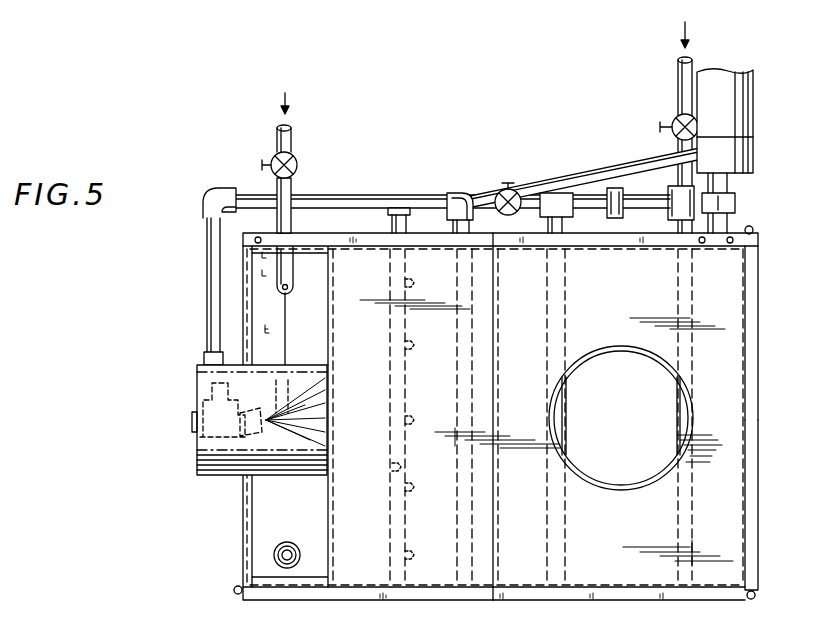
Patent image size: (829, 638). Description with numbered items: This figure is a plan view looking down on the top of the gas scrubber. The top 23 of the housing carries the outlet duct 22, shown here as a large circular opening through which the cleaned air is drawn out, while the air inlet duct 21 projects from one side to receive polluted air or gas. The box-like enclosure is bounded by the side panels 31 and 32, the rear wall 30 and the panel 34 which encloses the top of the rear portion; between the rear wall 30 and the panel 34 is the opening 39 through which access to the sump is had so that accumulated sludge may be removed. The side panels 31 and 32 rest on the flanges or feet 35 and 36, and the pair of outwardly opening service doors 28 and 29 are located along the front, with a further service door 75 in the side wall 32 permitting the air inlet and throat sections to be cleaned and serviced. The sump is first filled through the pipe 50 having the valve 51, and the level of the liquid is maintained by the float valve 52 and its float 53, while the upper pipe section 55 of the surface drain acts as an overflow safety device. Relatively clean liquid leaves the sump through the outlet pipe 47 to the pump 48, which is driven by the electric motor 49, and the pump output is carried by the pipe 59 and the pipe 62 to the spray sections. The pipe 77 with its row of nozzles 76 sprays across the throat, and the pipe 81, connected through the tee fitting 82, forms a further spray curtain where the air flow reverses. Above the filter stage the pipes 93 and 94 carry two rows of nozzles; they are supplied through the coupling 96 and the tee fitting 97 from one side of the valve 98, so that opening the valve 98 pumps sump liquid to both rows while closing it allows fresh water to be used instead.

The air inlet duct 21 is at (210, 477).
The outlet duct 22 is at (607, 492).
The top 23 is at (731, 288).
The service door 28 is at (753, 472).
The service door 29 is at (750, 314).
The rear wall 30 is at (243, 522).
The side panel 31 is at (413, 243).
The side panel 32 is at (572, 595).
The panel 34 is at (326, 497).
The flange or foot 35 is at (313, 232).
The flange or foot 36 is at (648, 598).
The opening 39 is at (259, 312).
The outlet pipe 47 is at (730, 223).
The pump 48 is at (742, 148).
The electric motor 49 is at (735, 100).
The pipe 50 is at (290, 140).
The valve 51 is at (295, 165).
The float valve 52 is at (279, 273).
The float 53 is at (300, 362).
The upper pipe section 55 is at (305, 530).
The pipe 59 is at (207, 241).
The pipe 62 is at (569, 181).
The service door 75 is at (342, 595).
The nozzles 76 is at (430, 368).
The pipe 77 is at (397, 468).
The pipe 81 is at (455, 235).
The tee fitting 82 is at (455, 197).
The pipe 93 is at (684, 279).
The pipe 94 is at (556, 310).
The coupling 96 is at (637, 200).
The tee fitting 97 is at (562, 220).
The valve 98 is at (497, 188).